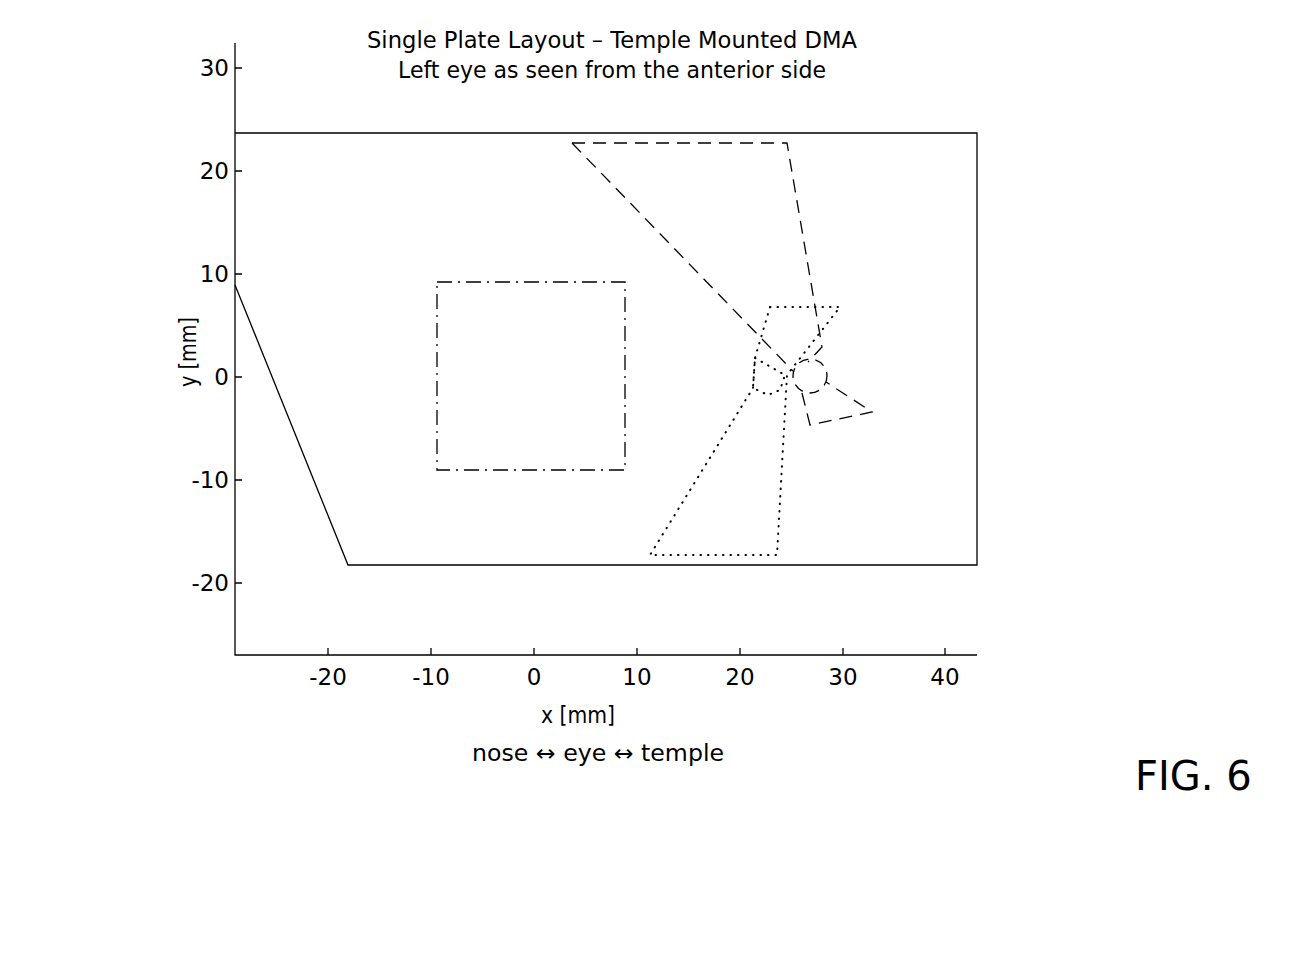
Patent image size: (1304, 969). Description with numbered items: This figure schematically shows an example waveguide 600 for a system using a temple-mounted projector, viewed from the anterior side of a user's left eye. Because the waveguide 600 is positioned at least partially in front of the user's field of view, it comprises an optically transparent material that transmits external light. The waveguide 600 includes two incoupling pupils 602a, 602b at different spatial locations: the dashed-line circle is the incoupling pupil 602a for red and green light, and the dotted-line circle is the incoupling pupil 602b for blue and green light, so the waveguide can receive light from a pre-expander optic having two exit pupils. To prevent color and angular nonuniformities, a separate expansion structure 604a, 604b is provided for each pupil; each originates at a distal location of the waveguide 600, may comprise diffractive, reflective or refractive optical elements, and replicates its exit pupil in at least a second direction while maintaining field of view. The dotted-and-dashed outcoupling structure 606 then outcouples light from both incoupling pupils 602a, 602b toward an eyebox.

The waveguide 600 is at (1030, 137).
The incoupling pupil 602a is at (818, 362).
The incoupling pupil 602b is at (768, 378).
The expansion structure 604a is at (797, 201).
The expansion structure 604b is at (778, 495).
The outcoupling structure 606 is at (462, 280).